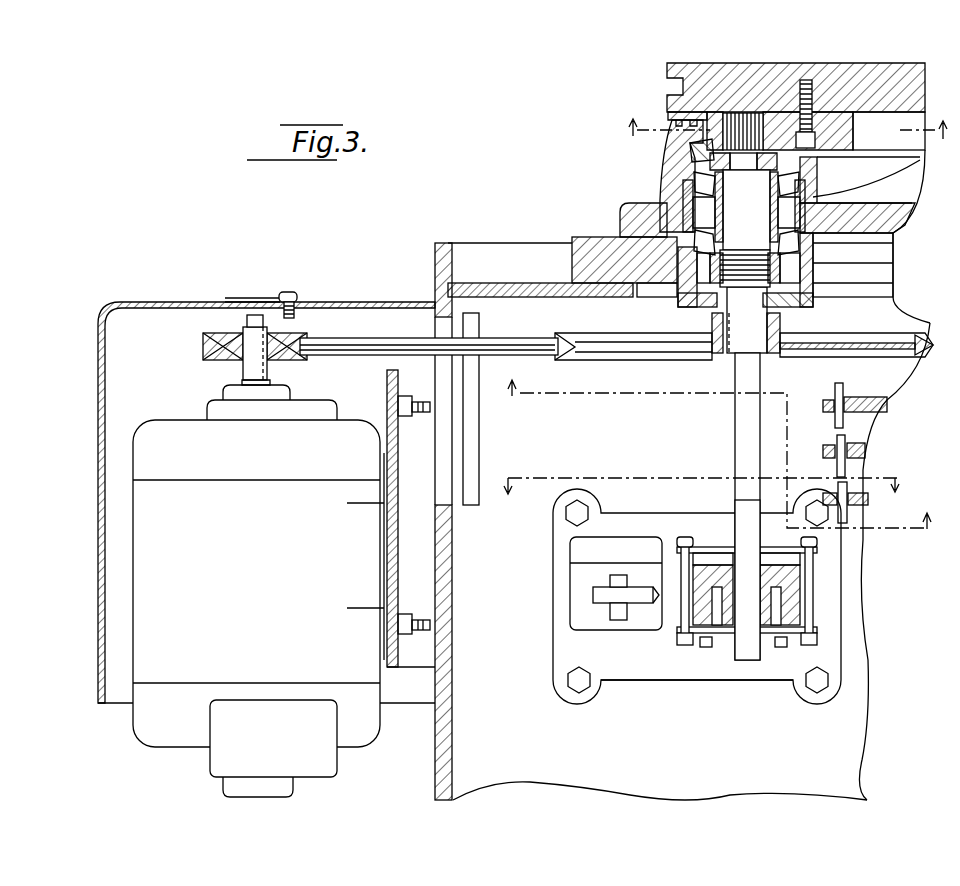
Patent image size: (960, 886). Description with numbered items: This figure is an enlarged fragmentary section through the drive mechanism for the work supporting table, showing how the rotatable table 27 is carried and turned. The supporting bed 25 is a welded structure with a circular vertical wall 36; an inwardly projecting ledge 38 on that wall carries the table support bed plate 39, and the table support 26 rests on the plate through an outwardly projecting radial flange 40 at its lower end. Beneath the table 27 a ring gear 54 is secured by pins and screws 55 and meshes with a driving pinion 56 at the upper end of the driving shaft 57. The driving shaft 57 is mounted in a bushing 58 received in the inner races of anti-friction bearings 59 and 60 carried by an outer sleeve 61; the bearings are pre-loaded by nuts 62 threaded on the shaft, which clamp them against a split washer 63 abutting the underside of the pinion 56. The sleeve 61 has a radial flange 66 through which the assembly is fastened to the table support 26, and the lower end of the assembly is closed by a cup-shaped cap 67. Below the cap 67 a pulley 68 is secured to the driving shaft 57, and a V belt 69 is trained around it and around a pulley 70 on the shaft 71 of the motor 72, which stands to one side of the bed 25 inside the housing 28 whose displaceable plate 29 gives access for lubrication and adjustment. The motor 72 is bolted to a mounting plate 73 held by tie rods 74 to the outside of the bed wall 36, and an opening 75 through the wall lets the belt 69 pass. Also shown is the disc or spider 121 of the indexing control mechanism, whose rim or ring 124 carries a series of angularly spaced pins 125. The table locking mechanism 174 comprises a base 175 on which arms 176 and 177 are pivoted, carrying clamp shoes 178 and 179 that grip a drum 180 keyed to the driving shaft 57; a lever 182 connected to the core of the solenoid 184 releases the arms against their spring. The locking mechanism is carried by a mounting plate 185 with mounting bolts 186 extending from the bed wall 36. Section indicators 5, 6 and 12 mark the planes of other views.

The supporting bed 25 is at (864, 724).
The table support 26 is at (906, 219).
The rotatable table 27 is at (925, 77).
The housing 28 is at (97, 450).
The displaceable plate 29 is at (287, 292).
The vertical wall 36 is at (453, 744).
The ledge 38 is at (497, 283).
The table support bed plate 39 is at (572, 237).
The radial flange 40 is at (630, 213).
The ring gear 54 is at (856, 131).
The pins and screws 55 is at (804, 86).
The driving pinion 56 is at (676, 118).
The driving shaft 57 is at (762, 331).
The bushing 58 is at (763, 201).
The anti-friction bearing 59 is at (688, 184).
The anti-friction bearing 60 is at (805, 257).
The outer sleeve 61 is at (803, 202).
The nuts 62 is at (782, 270).
The split washer 63 is at (694, 158).
The radial flange 66 is at (828, 254).
The cup-shaped cap 67 is at (813, 306).
The pulley 68 is at (636, 341).
The V belt 69 is at (523, 343).
The pulley 70 is at (291, 361).
The motor shaft 71 is at (249, 374).
The motor 72 is at (141, 725).
The mounting plate 73 is at (391, 565).
The tie rods 74 is at (419, 418).
The opening 75 is at (449, 493).
The disc or spider 121 is at (870, 400).
The rim or ring 124 is at (826, 404).
The pins 125 is at (828, 447).
The table locking mechanism 174 is at (736, 708).
The base 175 is at (682, 642).
The arm 176 is at (688, 547).
The arm 177 is at (815, 638).
The clamp shoe 178 is at (707, 648).
The clamp shoe 179 is at (804, 551).
The drum 180 is at (776, 647).
The lever 182 is at (645, 607).
The solenoid 184 is at (587, 626).
The mounting plate 185 is at (628, 678).
The mounting bolts 186 is at (582, 693).
The section line 5- 5 is at (719, 464).
The section line 6- 6 is at (783, 135).
The section line 12- 12 is at (702, 475).